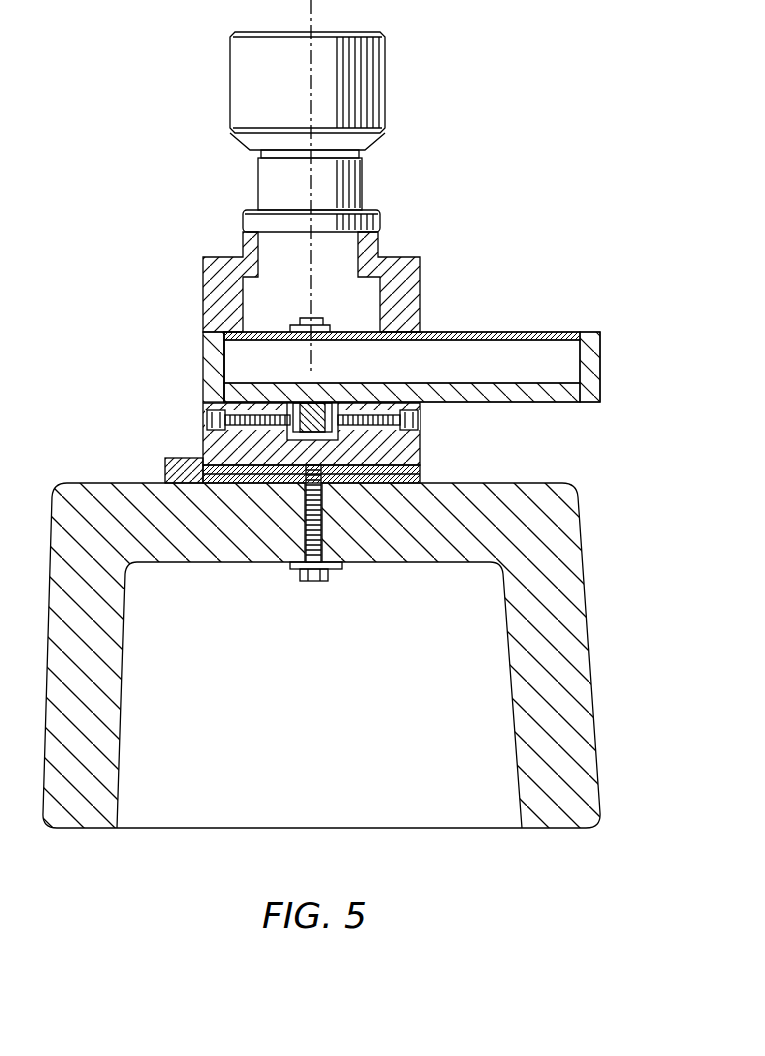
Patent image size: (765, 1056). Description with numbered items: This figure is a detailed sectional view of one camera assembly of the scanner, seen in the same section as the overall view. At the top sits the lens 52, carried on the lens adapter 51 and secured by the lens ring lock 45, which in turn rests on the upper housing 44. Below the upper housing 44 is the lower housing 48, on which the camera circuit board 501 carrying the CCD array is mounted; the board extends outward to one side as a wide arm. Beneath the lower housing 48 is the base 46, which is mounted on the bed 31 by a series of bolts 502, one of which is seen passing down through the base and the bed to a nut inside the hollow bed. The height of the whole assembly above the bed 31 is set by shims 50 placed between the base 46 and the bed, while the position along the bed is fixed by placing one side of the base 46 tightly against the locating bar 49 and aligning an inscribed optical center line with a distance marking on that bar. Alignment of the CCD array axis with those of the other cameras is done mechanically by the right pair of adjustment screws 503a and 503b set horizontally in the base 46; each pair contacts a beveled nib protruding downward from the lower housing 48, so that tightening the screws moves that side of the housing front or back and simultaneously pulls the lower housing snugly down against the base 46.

The bed 31 is at (100, 630).
The upper housing 44 is at (218, 300).
The lens ring lock 45 is at (380, 222).
The base 46 is at (205, 452).
The lower housing 48 is at (215, 372).
The locating bar 49 is at (180, 475).
The shims 50 is at (422, 476).
The lens adapter 51 is at (362, 170).
The lens 52 is at (383, 35).
The camera circuit board 501 is at (432, 332).
The bolts 502 is at (328, 577).
The adjustment screw 503a is at (415, 412).
The adjustment screw 503b is at (210, 420).